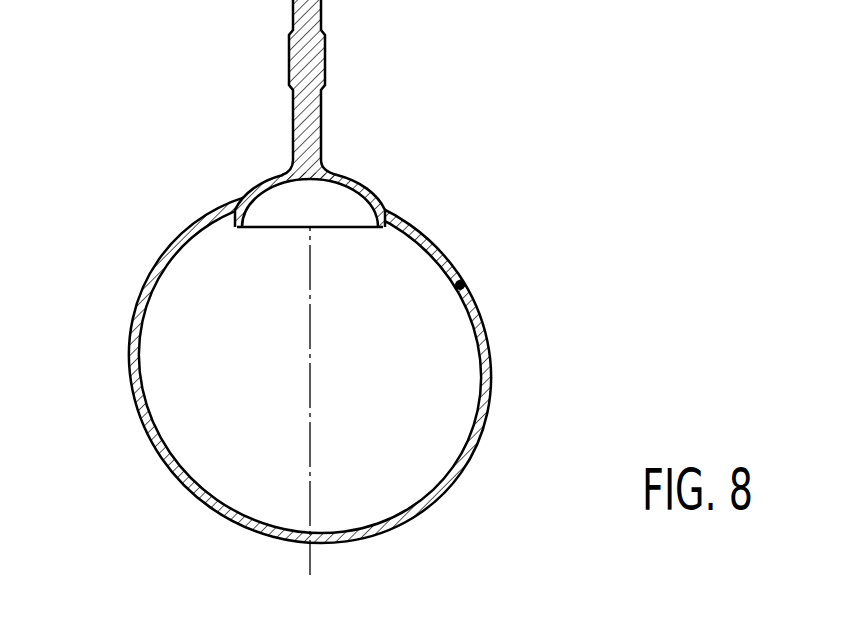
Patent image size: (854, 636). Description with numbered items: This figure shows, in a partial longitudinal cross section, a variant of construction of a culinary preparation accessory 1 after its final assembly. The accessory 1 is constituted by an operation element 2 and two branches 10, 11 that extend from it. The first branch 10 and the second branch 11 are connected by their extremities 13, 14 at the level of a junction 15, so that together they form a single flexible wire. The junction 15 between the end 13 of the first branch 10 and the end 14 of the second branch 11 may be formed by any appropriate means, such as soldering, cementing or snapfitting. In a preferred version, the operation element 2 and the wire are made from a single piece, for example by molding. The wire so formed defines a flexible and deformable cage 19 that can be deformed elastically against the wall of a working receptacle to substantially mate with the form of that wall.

The accessory 1 is at (146, 245).
The operation element 2 is at (326, 106).
The first branch 10 is at (433, 493).
The second branch 11 is at (432, 240).
The end of first branch 13 is at (453, 283).
The end of second branch 14 is at (453, 288).
The junction 15 is at (467, 279).
The cage 19 is at (368, 452).